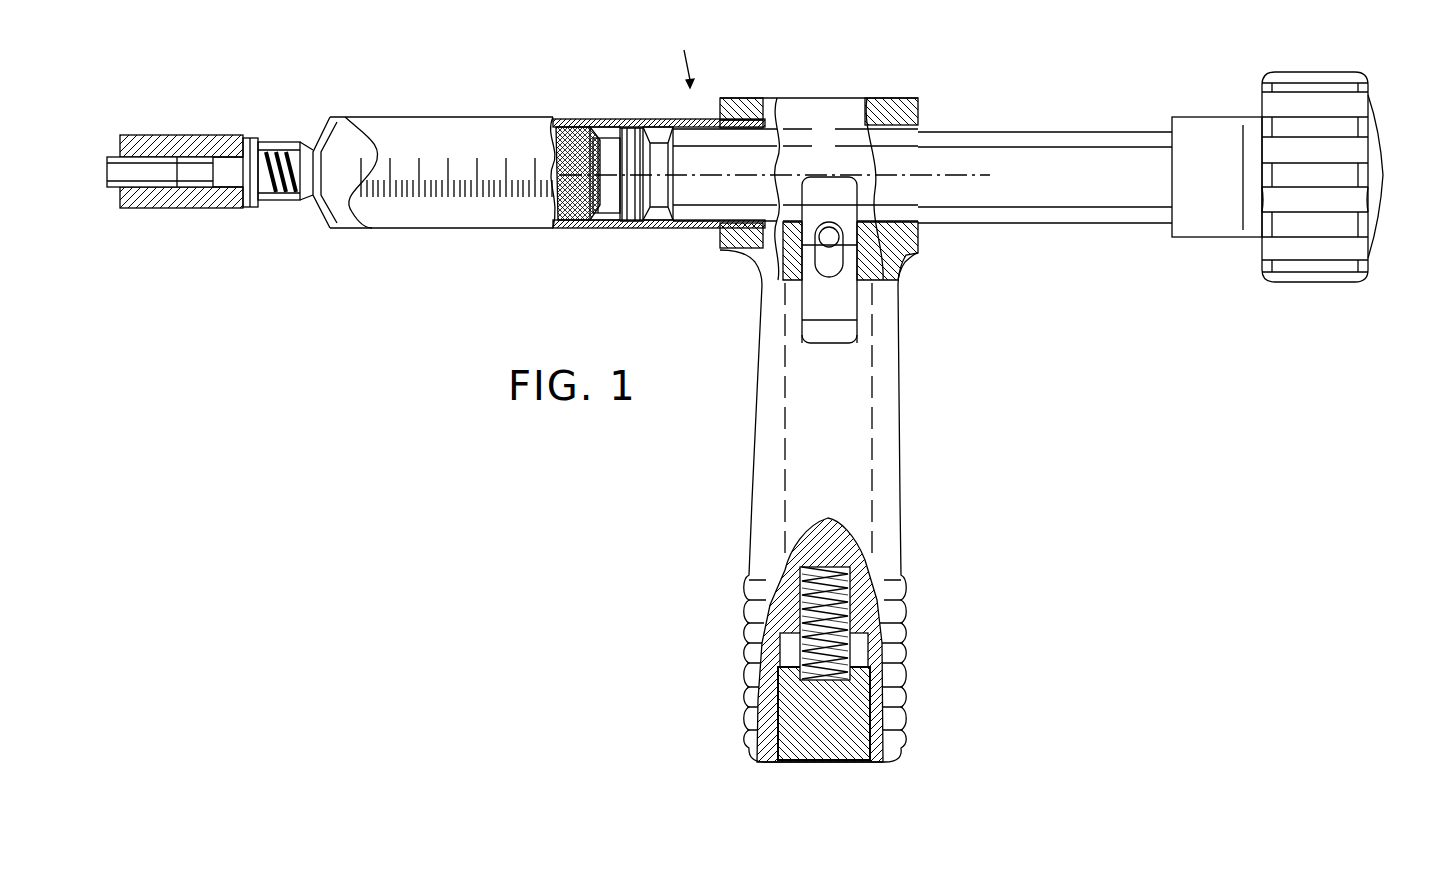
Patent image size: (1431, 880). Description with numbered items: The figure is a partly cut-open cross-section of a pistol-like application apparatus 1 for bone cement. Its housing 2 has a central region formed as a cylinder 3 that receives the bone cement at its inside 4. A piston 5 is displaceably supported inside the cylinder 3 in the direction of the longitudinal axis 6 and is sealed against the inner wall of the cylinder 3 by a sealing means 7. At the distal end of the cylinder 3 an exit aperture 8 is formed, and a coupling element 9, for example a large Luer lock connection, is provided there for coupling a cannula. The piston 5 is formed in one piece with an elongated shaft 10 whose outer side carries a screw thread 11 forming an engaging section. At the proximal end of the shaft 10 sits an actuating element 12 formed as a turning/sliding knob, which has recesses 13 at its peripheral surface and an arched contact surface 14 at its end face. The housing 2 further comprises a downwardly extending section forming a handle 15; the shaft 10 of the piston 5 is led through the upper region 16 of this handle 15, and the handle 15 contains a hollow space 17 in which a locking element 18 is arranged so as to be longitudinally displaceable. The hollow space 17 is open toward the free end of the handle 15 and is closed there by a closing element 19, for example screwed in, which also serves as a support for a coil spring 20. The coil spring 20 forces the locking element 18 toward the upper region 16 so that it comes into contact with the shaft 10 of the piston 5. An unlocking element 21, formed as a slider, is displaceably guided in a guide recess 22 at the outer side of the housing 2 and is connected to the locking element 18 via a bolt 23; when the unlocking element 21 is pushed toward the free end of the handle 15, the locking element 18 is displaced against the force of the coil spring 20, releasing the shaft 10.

The application apparatus 1 is at (683, 53).
The housing 2 is at (893, 115).
The cylinder 3 is at (580, 125).
The inside 4 is at (338, 140).
The piston 5 is at (612, 218).
The longitudinal axis 6 is at (698, 222).
The sealing means 7 is at (568, 226).
The exit aperture 8 is at (313, 190).
The coupling element 9 is at (178, 135).
The elongated shaft 10 is at (988, 152).
The screw thread 11 is at (1053, 138).
The actuating element 12 is at (1315, 97).
The recesses 13 is at (1350, 212).
The arched contact surface 14 is at (1383, 147).
The handle 15 is at (880, 486).
The upper region 16 is at (900, 243).
The hollow space 17 is at (855, 652).
The locking element 18 is at (858, 593).
The closing element 19 is at (850, 740).
The coil spring 20 is at (785, 650).
The unlocking element 21 is at (848, 306).
The guide recess 22 is at (840, 335).
The bolt 23 is at (828, 245).